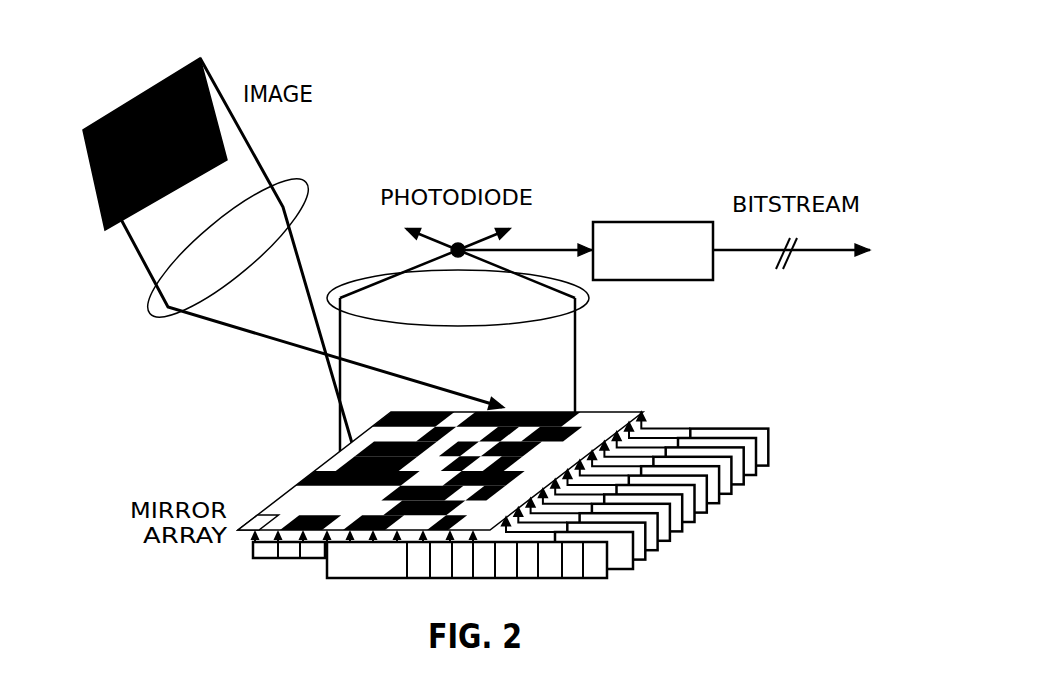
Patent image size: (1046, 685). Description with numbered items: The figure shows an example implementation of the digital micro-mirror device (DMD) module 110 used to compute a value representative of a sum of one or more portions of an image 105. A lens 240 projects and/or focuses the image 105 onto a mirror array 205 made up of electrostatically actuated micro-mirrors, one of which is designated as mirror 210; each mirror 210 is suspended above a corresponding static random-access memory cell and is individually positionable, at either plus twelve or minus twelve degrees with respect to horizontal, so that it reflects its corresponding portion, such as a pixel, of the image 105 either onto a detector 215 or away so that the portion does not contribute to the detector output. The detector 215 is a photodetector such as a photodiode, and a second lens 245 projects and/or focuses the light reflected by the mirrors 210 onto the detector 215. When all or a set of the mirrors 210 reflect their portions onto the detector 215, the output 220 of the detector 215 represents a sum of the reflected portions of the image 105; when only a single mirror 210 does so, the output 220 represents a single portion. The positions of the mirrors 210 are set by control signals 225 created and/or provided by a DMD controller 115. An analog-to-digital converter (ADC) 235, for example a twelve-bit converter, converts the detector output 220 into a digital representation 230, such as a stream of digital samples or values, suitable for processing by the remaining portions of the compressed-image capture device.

The image 105 is at (157, 88).
The lens 240 is at (150, 317).
The lens 245 is at (587, 303).
The detector 215 is at (450, 251).
The output of the detector 220 is at (523, 248).
The analog-to-digital converter (ADC) 235 is at (648, 222).
The digital representation 230 is at (737, 252).
The mirror array 205 is at (295, 470).
The mirror 210 is at (255, 518).
The control signals 225 is at (753, 410).
The DMD controller 115 is at (795, 566).
The digital micro-mirror device (DMD) module 110 is at (718, 600).